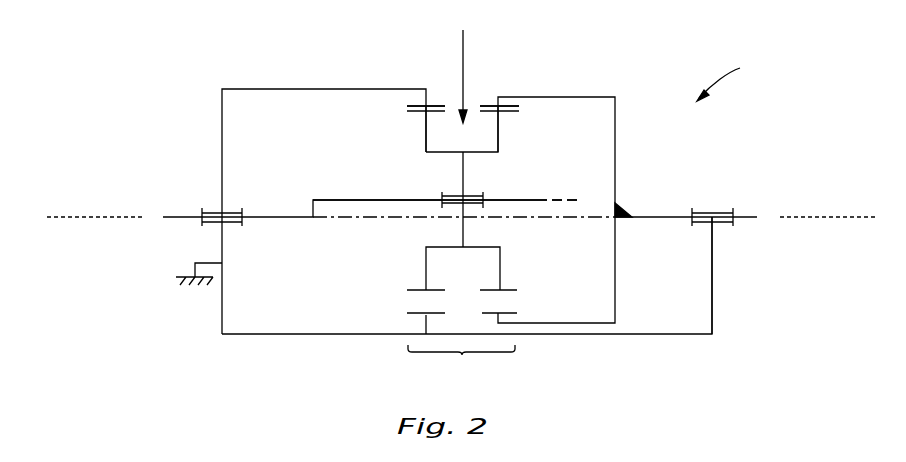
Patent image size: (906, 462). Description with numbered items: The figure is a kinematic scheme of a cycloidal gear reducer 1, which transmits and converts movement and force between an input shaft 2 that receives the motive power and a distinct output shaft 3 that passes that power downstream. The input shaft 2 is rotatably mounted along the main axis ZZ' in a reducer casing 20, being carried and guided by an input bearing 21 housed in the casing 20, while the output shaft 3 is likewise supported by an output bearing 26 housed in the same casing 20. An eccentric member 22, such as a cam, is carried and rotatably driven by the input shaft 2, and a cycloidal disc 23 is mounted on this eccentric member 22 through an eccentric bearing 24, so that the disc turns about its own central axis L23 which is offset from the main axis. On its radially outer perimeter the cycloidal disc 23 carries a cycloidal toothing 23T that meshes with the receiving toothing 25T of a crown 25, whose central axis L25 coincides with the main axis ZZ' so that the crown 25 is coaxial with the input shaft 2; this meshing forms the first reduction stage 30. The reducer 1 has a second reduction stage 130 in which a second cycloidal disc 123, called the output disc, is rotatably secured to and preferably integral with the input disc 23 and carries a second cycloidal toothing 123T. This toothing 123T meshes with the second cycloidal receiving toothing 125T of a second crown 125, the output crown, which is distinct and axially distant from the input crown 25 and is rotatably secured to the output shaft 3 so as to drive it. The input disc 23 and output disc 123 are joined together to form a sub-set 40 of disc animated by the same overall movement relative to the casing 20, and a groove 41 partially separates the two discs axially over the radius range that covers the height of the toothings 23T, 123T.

The cycloidal gear reducer 1 is at (726, 79).
The input shaft 2 is at (178, 217).
The output shaft 3 is at (743, 218).
The reducer casing 20 is at (195, 264).
The input bearing 21 is at (233, 222).
The eccentric member 22 is at (326, 200).
The cycloidal disc 23 is at (426, 152).
The cycloidal toothing 23T is at (420, 116).
The eccentric bearing 24 is at (469, 197).
The crown 25 is at (317, 89).
The receiving toothing 25T is at (420, 107).
The output bearing 26 is at (712, 210).
The first reduction stage 30 is at (461, 337).
The sub-set of disc 40 is at (463, 30).
The groove 41 is at (477, 280).
The second cycloidal disc 123 is at (507, 152).
The second cycloidal toothing 123T is at (507, 116).
The second crown 125 is at (608, 97).
The second cycloidal receiving toothing 125T is at (510, 108).
The second reduction stage 130 is at (491, 337).
The central axis of the cycloidal disc L23 is at (582, 200).
The central axis of the crown L25 is at (386, 217).